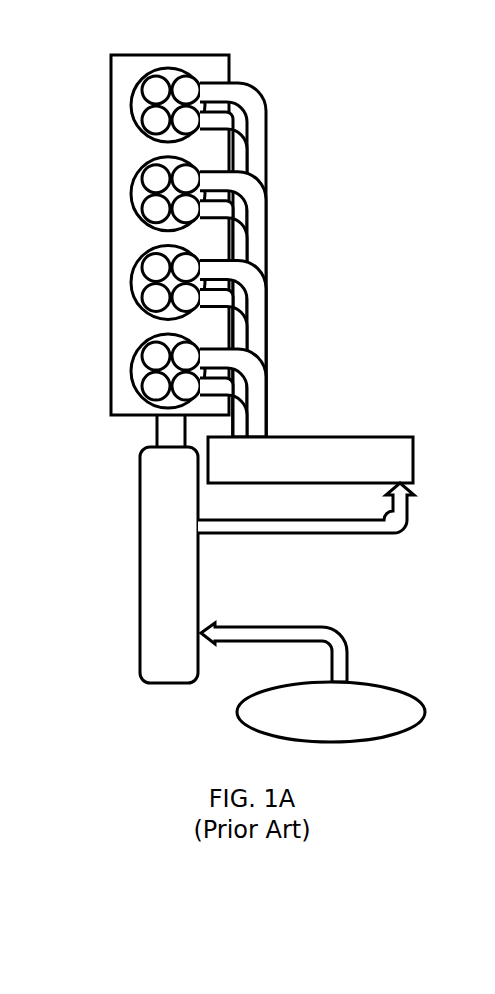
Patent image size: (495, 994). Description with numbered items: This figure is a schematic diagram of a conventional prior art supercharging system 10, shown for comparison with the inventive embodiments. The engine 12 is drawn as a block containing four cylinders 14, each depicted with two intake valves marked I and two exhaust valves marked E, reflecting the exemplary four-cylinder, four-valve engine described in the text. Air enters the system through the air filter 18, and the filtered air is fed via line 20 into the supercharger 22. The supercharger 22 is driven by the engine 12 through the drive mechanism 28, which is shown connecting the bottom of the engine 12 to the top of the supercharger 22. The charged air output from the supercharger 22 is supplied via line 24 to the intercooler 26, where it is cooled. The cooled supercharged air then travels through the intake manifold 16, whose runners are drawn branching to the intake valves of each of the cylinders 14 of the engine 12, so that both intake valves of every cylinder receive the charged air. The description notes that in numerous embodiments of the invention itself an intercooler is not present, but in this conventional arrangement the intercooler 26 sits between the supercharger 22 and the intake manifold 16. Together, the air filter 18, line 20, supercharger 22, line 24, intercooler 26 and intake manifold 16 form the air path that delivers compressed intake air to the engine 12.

The supercharging system 10 is at (416, 58).
The engine 12 is at (110, 122).
The cylinders 14 is at (212, 61).
The intake manifold 16 is at (260, 139).
The air filter 18 is at (377, 683).
The line 20 is at (338, 630).
The supercharger 22 is at (140, 535).
The line 24 is at (330, 536).
The intercooler 26 is at (312, 435).
The drive mechanism 28 is at (158, 434).